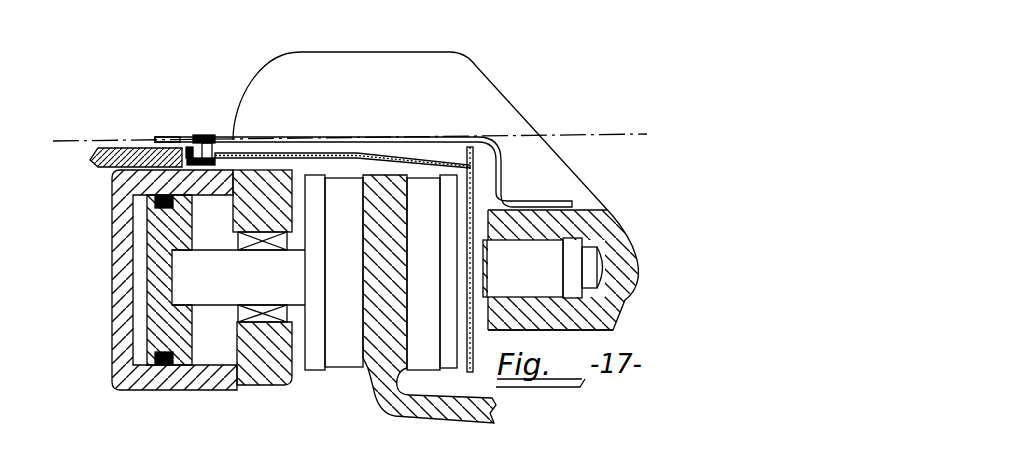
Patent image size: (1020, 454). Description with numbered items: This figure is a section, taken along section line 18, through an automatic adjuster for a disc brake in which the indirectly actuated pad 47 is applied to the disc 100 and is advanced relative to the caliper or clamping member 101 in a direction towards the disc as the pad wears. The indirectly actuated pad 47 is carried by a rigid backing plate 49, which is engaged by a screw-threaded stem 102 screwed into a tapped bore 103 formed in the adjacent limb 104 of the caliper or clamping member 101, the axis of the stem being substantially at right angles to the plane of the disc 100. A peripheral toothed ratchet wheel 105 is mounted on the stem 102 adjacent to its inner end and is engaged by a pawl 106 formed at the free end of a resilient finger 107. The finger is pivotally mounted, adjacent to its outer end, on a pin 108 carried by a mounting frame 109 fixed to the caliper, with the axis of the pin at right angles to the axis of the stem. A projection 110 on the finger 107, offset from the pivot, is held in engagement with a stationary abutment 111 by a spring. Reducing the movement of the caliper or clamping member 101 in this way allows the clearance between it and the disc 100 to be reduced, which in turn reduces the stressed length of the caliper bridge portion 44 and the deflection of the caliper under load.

The section line 18 is at (68, 118).
The caliper bridge portion 44 is at (435, 175).
The indirectly actuated pad 47 is at (423, 348).
The rigid backing plate 49 is at (453, 352).
The disc 100 is at (366, 366).
The caliper or clamping member 101 is at (377, 52).
The screw-threaded stem 102 is at (613, 330).
The tapped bore 103 is at (540, 238).
The limb 104 is at (571, 260).
The peripheral toothed ratchet wheel 105 is at (500, 175).
The pawl 106 is at (470, 150).
The resilient finger 107 is at (343, 152).
The pin 108 is at (206, 135).
The mounting frame 109 is at (363, 151).
The projection 110 is at (185, 140).
The stationary abutment 111 is at (98, 168).